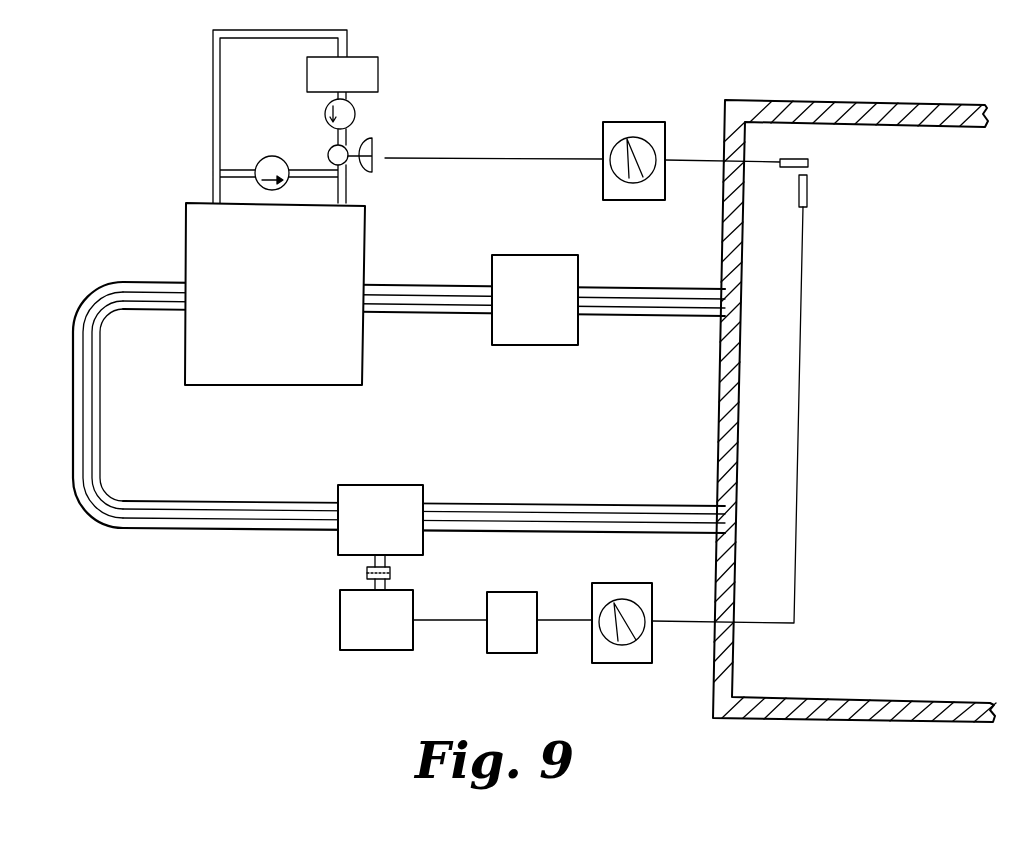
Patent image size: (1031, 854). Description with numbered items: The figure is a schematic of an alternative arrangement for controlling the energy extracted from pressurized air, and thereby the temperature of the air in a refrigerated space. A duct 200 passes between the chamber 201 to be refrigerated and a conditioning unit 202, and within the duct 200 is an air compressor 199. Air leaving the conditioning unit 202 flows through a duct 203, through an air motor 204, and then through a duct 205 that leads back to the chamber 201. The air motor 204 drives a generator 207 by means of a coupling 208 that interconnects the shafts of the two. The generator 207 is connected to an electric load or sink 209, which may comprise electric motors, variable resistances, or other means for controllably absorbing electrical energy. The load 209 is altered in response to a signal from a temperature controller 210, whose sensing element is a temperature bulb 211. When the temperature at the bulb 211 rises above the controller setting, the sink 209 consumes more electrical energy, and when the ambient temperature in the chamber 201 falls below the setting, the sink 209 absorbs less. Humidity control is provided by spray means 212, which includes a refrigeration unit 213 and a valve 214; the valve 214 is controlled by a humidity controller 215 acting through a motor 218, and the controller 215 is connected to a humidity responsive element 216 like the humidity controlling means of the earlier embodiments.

The air compressor 199 is at (578, 338).
The duct 200 is at (625, 289).
The chamber 201 is at (908, 102).
The conditioning unit 202 is at (363, 350).
The duct 203 is at (185, 531).
The air motor 204 is at (338, 548).
The duct 205 is at (567, 536).
The generator 207 is at (372, 650).
The coupling 208 is at (390, 572).
The electric load or sink 209 is at (510, 653).
The temperature controller 210 is at (625, 663).
The temperature bulb 211 is at (808, 190).
The spray means 212 is at (204, 106).
The refrigeration unit 213 is at (378, 75).
The valve 214 is at (328, 153).
The humidity controller 215 is at (631, 200).
The humidity responsive element 216 is at (808, 160).
The motor 218 is at (383, 170).